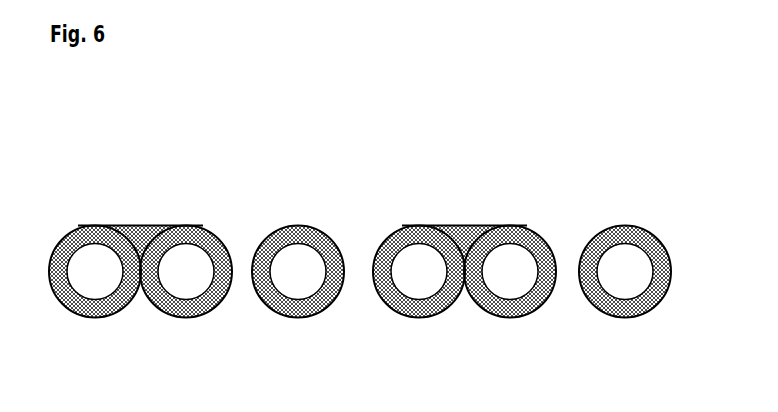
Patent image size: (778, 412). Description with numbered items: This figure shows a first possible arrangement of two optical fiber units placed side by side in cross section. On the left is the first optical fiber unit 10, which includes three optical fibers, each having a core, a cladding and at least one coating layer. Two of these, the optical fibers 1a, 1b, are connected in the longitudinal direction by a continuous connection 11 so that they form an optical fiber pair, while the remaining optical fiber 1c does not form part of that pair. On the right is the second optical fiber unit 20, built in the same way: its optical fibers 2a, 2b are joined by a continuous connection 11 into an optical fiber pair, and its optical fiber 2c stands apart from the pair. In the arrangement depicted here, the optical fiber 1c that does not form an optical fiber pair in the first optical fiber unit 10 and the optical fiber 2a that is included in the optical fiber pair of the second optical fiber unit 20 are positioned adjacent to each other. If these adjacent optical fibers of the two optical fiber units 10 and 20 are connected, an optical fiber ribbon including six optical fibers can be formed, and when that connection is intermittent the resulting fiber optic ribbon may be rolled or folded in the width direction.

The first optical fiber unit 10 is at (142, 250).
The second optical fiber unit 20 is at (467, 250).
The continuous connection 11 is at (132, 233).
The optical fiber 1a is at (77, 315).
The optical fiber 1b is at (199, 316).
The optical fiber 1c is at (306, 317).
The optical fiber 2a is at (403, 315).
The optical fiber 2b is at (527, 314).
The optical fiber 2c is at (636, 316).